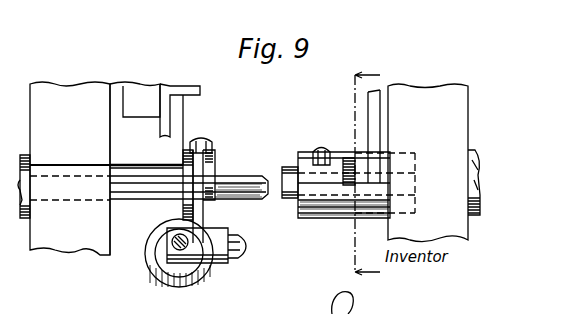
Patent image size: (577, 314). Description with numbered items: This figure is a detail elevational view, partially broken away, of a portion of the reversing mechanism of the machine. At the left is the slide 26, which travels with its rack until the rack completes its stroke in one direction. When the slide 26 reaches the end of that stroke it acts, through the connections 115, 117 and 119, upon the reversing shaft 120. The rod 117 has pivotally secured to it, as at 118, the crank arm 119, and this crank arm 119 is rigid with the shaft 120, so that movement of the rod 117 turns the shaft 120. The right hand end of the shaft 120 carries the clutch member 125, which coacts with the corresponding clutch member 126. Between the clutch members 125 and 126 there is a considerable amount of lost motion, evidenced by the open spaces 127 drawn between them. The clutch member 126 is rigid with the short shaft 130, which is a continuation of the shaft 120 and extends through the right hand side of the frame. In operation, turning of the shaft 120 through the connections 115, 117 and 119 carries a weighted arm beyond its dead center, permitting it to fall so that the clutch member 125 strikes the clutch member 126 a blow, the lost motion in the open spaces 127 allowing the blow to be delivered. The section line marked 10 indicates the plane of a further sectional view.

The slide 26 is at (136, 92).
The connection 115 is at (163, 110).
The rod 117 is at (176, 244).
The pivot 118 is at (238, 257).
The crank arm 119 is at (205, 226).
The shaft 120 is at (254, 179).
The clutch member 125 is at (315, 218).
The clutch member 126 is at (390, 148).
The open spaces 127 is at (352, 182).
The short shaft 130 is at (476, 152).
The section line 10 is at (360, 177).